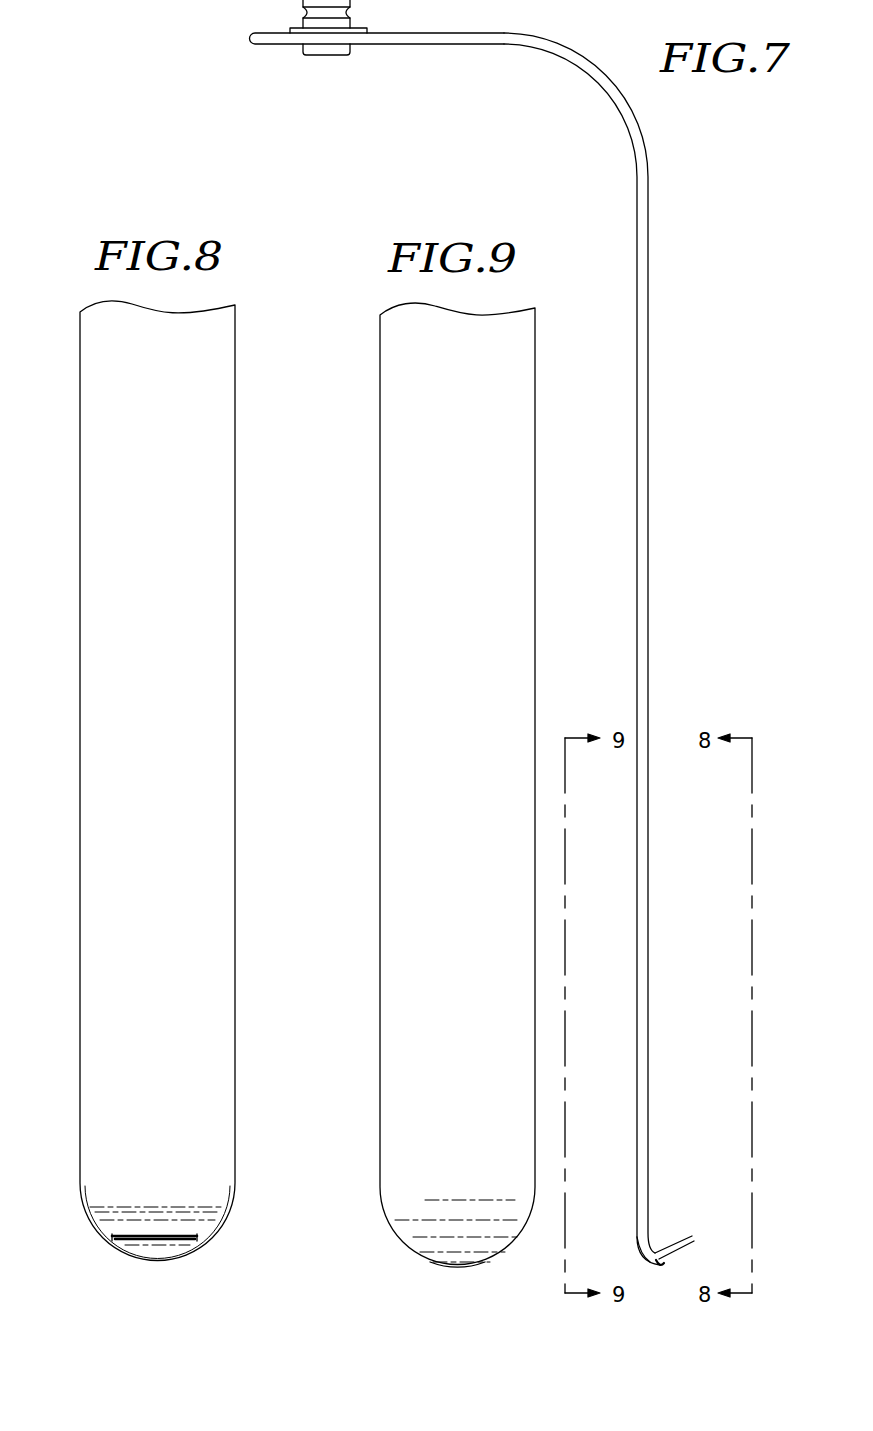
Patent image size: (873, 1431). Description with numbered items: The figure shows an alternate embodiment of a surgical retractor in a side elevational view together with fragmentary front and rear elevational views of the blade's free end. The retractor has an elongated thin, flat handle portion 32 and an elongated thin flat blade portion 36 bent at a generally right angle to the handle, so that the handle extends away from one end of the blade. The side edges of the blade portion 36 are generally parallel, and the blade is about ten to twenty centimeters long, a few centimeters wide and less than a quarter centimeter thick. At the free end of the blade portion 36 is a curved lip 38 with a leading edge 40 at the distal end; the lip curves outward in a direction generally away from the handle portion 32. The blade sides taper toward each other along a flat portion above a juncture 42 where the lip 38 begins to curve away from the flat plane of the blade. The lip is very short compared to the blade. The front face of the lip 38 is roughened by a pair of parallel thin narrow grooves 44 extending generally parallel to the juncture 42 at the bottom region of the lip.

In FIG. 7, the handle portion 32 is at (392, 44).
In FIG. 7, the blade portion 36 is at (649, 601).
In FIG. 8, the blade portion 36 is at (112, 648).
In FIG. 9, the blade portion 36 is at (420, 651).
In FIG. 9, the curved lip 38 is at (444, 1218).
In FIG. 7, the leading edge 40 is at (660, 1265).
In FIG. 9, the leading edge 40 is at (457, 1265).
In FIG. 7, the juncture 42 is at (650, 1242).
In FIG. 8, the juncture 42 is at (168, 1207).
In FIG. 7, the grooves 44 is at (693, 1236).
In FIG. 8, the grooves 44 is at (142, 1237).